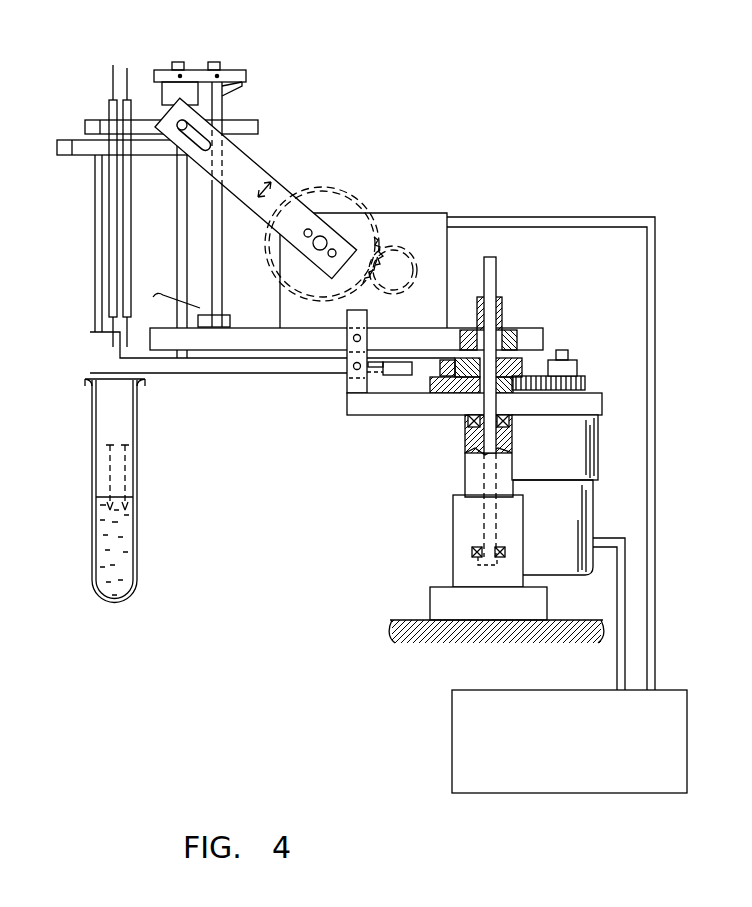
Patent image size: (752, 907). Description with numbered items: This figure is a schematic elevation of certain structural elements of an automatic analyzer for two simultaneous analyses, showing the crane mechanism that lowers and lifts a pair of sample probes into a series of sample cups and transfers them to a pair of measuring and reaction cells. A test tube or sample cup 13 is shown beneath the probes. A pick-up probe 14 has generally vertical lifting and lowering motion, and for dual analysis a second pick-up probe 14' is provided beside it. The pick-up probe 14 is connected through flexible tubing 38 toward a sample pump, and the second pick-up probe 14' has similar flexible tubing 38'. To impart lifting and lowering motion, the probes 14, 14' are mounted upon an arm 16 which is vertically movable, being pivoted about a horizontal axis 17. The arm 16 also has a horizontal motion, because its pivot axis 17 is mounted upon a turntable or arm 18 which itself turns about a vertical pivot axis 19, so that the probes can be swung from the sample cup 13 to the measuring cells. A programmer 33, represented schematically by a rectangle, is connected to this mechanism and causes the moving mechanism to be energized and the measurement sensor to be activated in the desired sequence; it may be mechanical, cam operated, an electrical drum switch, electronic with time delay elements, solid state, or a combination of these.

The sample cup 13 is at (92, 473).
The pick-up probe 14 is at (72, 223).
The second pick-up probe 14' is at (79, 223).
The arm 16 is at (262, 168).
The horizontal axis 17 is at (326, 238).
The arm 18 is at (538, 330).
The vertical pivot axis 19 is at (500, 256).
The programmer 33 is at (502, 690).
The flexible tubing 38 is at (87, 63).
The flexible tubing 38' is at (153, 54).